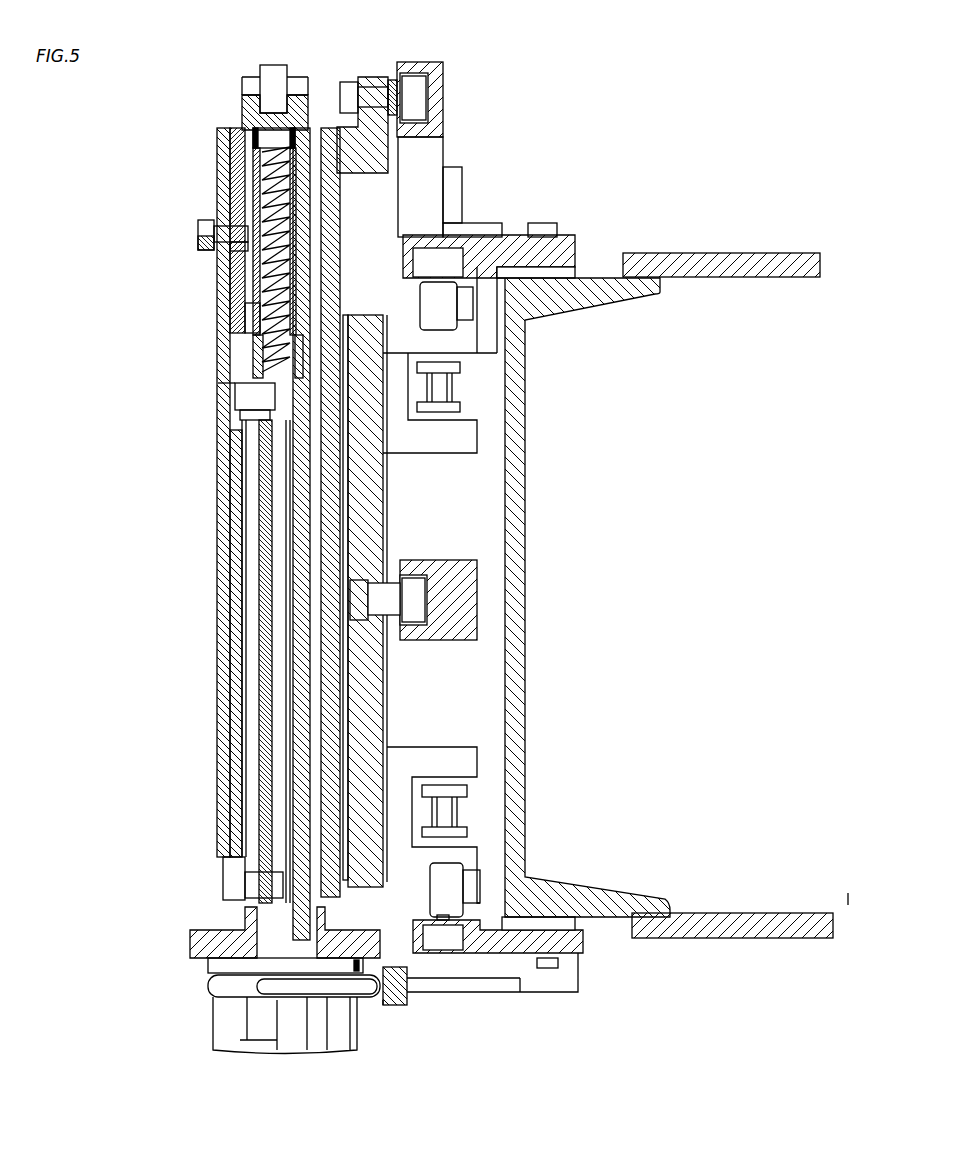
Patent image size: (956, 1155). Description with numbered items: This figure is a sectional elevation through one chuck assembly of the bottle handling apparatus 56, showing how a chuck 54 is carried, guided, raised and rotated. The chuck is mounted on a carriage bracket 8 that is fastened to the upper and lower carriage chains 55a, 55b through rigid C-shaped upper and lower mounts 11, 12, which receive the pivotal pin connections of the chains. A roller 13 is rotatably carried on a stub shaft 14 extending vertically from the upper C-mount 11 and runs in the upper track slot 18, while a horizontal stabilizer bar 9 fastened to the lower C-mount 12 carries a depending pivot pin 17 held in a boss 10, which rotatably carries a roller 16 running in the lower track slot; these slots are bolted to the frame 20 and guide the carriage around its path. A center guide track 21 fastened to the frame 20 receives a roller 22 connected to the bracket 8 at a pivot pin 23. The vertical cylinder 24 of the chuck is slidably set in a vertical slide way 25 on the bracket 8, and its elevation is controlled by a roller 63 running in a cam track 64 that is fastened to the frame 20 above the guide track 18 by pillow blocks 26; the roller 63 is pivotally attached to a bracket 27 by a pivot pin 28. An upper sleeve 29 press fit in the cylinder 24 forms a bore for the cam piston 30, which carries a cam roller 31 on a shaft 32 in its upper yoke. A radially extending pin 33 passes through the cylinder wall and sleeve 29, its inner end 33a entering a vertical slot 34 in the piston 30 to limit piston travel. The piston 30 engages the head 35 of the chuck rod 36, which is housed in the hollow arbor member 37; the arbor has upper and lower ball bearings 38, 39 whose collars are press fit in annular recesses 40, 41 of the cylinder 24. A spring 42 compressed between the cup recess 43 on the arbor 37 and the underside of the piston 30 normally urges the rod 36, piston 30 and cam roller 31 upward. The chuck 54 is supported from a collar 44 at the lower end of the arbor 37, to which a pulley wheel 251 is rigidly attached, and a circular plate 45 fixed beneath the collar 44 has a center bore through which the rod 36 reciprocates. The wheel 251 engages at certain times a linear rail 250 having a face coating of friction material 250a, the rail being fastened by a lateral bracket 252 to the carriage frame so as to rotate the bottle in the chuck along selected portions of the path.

The carriage bracket 8 is at (375, 497).
The horizontal stabilizer bar 9 is at (475, 882).
The boss 10 is at (453, 870).
The upper C-shaped mount 11 is at (458, 450).
The lower C-shaped mount 12 is at (458, 750).
The roller 13 is at (413, 262).
The stub shaft 14 is at (418, 284).
The roller 16 is at (425, 941).
The pivot pin 17 is at (432, 915).
The upper track slot 18 is at (455, 238).
The frame 20 is at (515, 357).
The center guide track 21 is at (442, 562).
The roller 22 is at (455, 620).
The pivot pin 23 is at (430, 590).
The vertical cylinder 24 is at (220, 551).
The vertical slide way 25 is at (345, 527).
The pillow block 26 is at (440, 148).
The bracket 27 is at (362, 174).
The pivot pin 28 is at (355, 83).
The upper sleeve 29 is at (232, 158).
The cam piston 30 is at (243, 104).
The cam roller 31 is at (272, 66).
The shaft 32 is at (245, 82).
The radially extending pin 33 is at (199, 236).
The inner end of pin 33a is at (236, 251).
The vertical slot 34 is at (250, 200).
The head 35 is at (258, 134).
The chuck rod 36 is at (273, 634).
The hollow arbor member 37 is at (258, 454).
The upper ball bearing support 38 is at (240, 392).
The lower ball bearing support 39 is at (250, 892).
The annular recess 40 is at (240, 414).
The annular recess 41 is at (243, 858).
The spring 42 is at (263, 314).
The cup recess 43 is at (262, 342).
The collar 44 is at (190, 936).
The circular plate 45 is at (212, 968).
The chuck 54 is at (188, 1020).
The upper carriage chain 55a is at (455, 374).
The lower carriage chain 55b is at (455, 800).
The handling apparatus 56 is at (535, 208).
The roller 63 is at (410, 64).
The cam track 64 is at (432, 104).
The linear rail 250 is at (400, 1003).
The friction material face coating 250a is at (385, 1007).
The pulley wheel 251 is at (210, 988).
The lateral bracket 252 is at (560, 990).